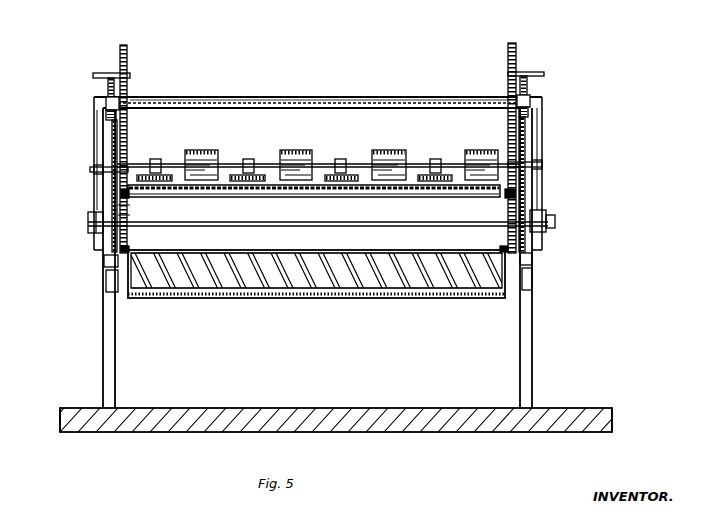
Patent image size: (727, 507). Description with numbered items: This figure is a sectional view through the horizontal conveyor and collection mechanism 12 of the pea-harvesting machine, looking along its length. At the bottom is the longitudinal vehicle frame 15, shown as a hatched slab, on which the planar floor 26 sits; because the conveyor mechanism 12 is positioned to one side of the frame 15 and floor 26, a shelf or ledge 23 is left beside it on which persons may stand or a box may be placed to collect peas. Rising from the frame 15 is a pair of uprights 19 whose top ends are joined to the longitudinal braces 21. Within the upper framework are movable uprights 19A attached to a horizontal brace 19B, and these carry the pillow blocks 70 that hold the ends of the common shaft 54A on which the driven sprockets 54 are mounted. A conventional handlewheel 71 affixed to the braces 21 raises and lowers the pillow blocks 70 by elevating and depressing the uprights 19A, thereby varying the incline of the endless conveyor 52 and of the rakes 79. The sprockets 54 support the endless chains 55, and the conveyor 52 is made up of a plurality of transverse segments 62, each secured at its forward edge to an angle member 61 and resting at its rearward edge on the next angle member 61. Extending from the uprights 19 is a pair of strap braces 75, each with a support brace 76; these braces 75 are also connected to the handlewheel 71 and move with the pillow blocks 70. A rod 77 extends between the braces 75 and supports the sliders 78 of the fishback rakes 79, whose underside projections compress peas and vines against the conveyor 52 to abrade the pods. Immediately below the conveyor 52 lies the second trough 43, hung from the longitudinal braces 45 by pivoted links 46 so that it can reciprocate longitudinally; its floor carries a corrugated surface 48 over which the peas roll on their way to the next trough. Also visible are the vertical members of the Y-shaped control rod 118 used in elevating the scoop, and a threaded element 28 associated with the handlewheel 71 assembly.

The horizontal conveyor and collection mechanism 12 is at (389, 94).
The vehicle frame 15 is at (128, 432).
The uprights 19 is at (103, 362).
The uprights 19A is at (95, 153).
The horizontal brace 19B is at (300, 97).
The longitudinal braces 21 is at (105, 117).
The shelf or ledge 23 is at (595, 407).
The planar floor 26 is at (65, 407).
The screw 28 is at (112, 189).
The second trough 43 is at (265, 298).
The longitudinal braces 45 is at (105, 265).
The links 46 is at (108, 287).
The corrugated surface 48 is at (350, 296).
The endless conveyor 52 is at (314, 185).
The driven sprockets 54 is at (128, 212).
The common shaft 54A is at (242, 226).
The endless chains 55 is at (131, 250).
The angle members 61 is at (205, 198).
The segments 62 is at (365, 196).
The pillow blocks 70 is at (92, 235).
The handlewheel 71 is at (101, 73).
The strap braces 75 is at (92, 170).
The support brace 76 is at (97, 206).
The rod 77 is at (418, 163).
The sliders 78 is at (155, 160).
The fishback rakes 79 is at (185, 153).
The Y-shaped control rod 118 is at (122, 46).